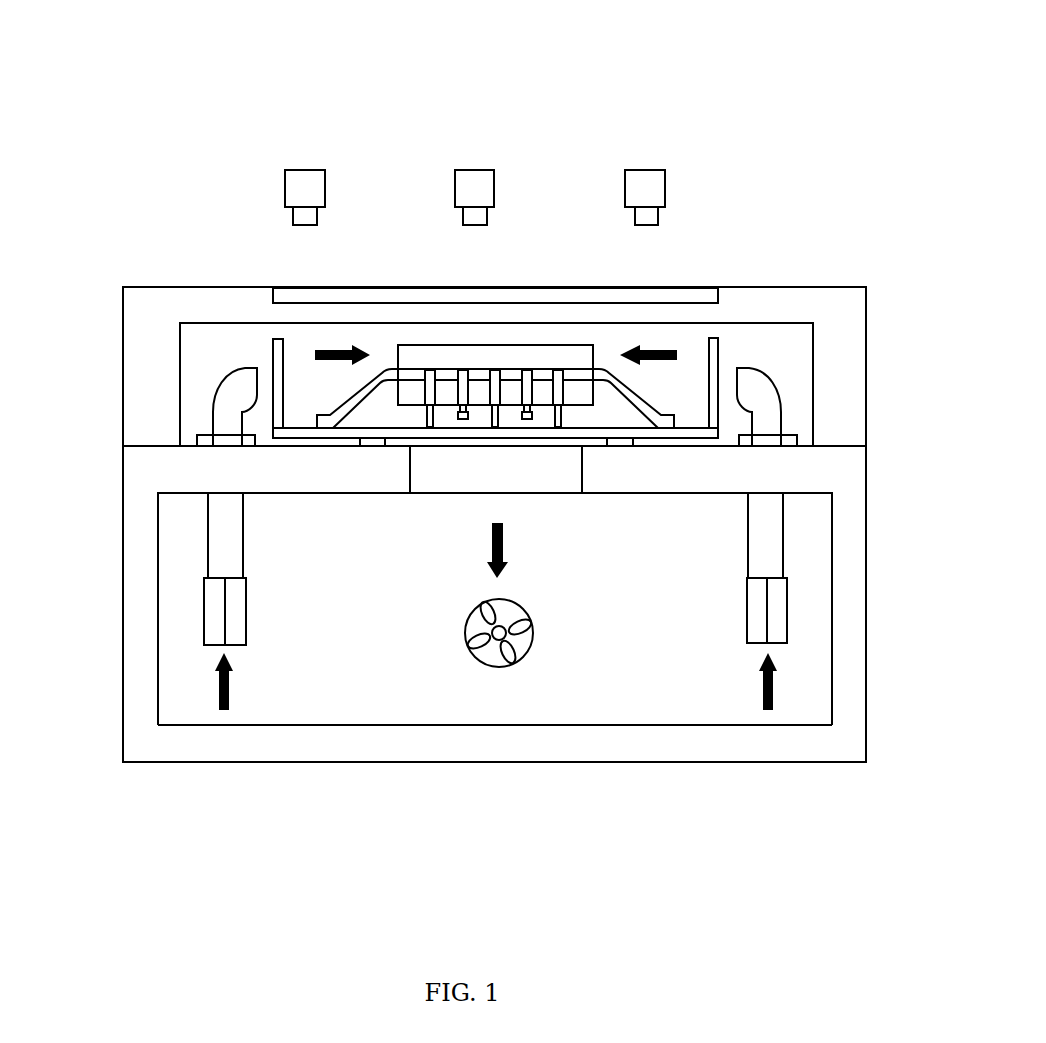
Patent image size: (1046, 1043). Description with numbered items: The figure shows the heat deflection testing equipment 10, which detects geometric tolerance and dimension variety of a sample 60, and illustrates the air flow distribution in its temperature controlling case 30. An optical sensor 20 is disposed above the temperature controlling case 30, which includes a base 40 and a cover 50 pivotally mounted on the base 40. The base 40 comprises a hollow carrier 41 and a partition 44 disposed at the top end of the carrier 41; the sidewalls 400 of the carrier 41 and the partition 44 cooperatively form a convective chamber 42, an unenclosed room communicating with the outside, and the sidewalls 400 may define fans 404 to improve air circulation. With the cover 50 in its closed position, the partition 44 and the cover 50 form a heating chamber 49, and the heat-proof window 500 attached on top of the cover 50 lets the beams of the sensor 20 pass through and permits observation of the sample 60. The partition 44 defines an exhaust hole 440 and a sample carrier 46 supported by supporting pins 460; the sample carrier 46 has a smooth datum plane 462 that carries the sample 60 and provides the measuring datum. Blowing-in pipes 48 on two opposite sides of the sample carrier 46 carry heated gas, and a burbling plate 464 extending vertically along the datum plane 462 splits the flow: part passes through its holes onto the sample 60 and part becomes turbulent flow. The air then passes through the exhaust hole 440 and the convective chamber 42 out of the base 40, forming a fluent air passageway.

The heat deflection testing equipment 10 is at (463, 52).
The optical sensor 20 is at (310, 149).
The temperature controlling case 30 is at (784, 791).
The base 40 is at (848, 613).
The carrier 41 is at (597, 750).
The convective chamber 42 is at (275, 687).
The partition 44 is at (773, 472).
The sample carrier 46 is at (720, 426).
The blowing-in pipes 48 is at (233, 388).
The heating chamber 49 is at (195, 373).
The cover 50 is at (145, 317).
The sample 60 is at (484, 352).
The sidewalls 400 is at (142, 642).
The fans 404 is at (495, 658).
The exhaust hole 440 is at (457, 478).
The supporting pins 460 is at (367, 442).
The datum plane 462 is at (693, 428).
The burbling plate 464 is at (715, 355).
The heat-proof window 500 is at (580, 295).